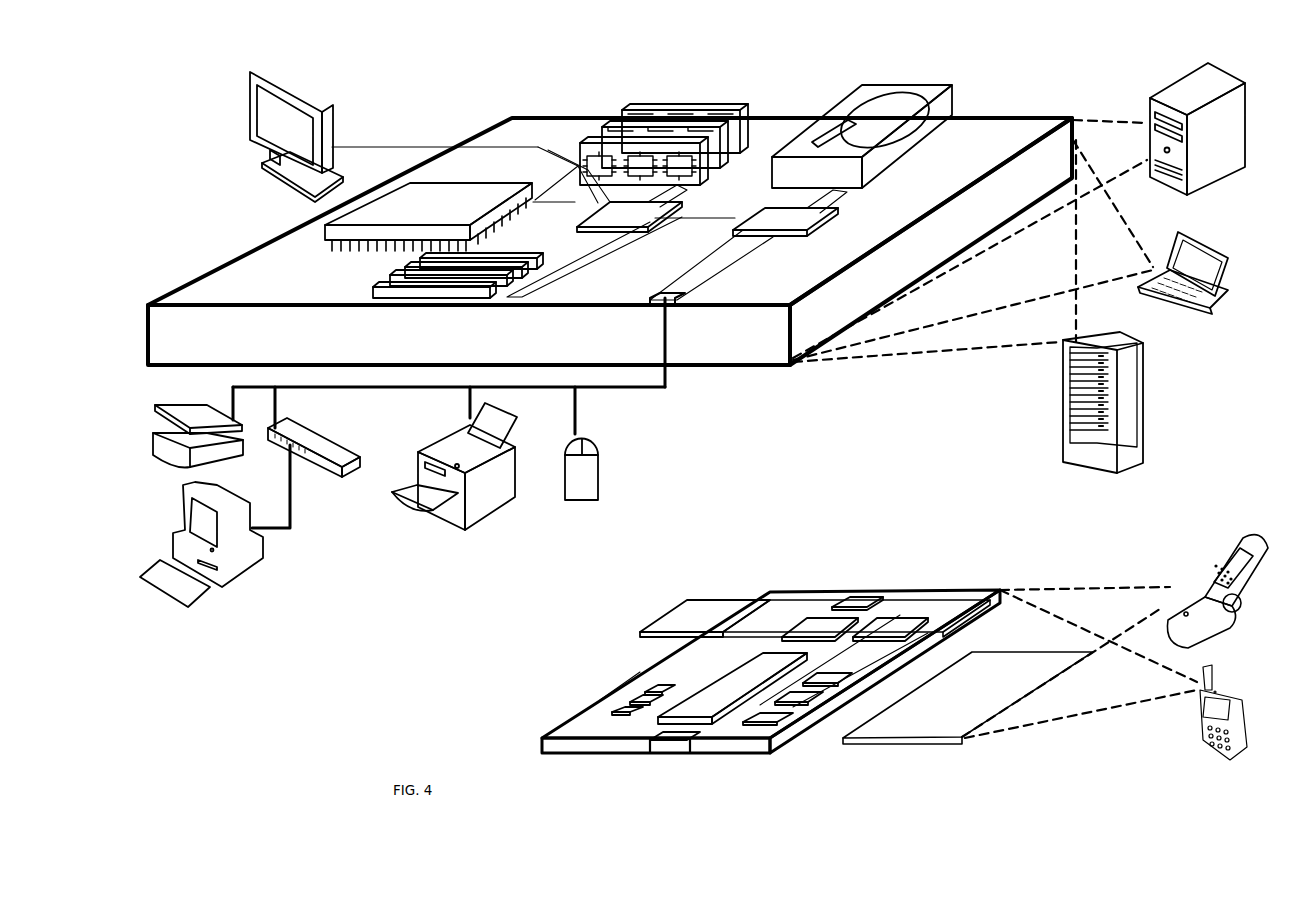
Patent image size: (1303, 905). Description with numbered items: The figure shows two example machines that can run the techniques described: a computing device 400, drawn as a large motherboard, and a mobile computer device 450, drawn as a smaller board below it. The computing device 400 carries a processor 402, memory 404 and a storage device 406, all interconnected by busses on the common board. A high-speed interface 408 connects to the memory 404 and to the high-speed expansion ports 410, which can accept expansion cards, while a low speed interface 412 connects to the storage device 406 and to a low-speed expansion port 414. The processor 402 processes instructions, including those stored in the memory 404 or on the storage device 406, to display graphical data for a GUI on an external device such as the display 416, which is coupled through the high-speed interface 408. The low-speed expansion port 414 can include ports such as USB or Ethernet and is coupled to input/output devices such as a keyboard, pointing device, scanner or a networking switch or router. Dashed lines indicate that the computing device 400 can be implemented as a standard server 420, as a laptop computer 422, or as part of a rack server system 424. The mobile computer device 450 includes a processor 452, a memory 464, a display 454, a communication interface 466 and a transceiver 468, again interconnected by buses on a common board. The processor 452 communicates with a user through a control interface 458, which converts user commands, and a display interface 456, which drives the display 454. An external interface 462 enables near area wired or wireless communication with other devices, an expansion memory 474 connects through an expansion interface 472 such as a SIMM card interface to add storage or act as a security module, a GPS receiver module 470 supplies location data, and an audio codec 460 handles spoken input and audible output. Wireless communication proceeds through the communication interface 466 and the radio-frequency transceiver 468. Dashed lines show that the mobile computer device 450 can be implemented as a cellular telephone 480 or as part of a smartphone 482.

The computing device 400 is at (441, 92).
The processor 402 is at (323, 233).
The memory 404 is at (634, 110).
The storage device 406 is at (853, 104).
The high-speed interface 408 is at (607, 207).
The high-speed expansion ports 410 is at (405, 274).
The low speed interface 412 is at (788, 213).
The low-speed expansion port 414 is at (676, 302).
The display 416 is at (250, 76).
The standard server 420 is at (1150, 104).
The laptop computer 422 is at (1178, 235).
The rack server system 424 is at (1063, 427).
The mobile computer device 450 is at (750, 574).
The processor 452 is at (700, 750).
The display 454 is at (962, 738).
The display interface 456 is at (776, 726).
The control interface 458 is at (800, 712).
The audio codec 460 is at (825, 688).
The external interface 462 is at (673, 741).
The memory 464 is at (628, 706).
The communication interface 466 is at (820, 620).
The transceiver 468 is at (893, 622).
The GPS receiver module 470 is at (863, 594).
The expansion interface 472 is at (748, 601).
The expansion memory 474 is at (687, 601).
The cellular telephone 480 is at (1223, 540).
The smartphone 482 is at (1206, 668).